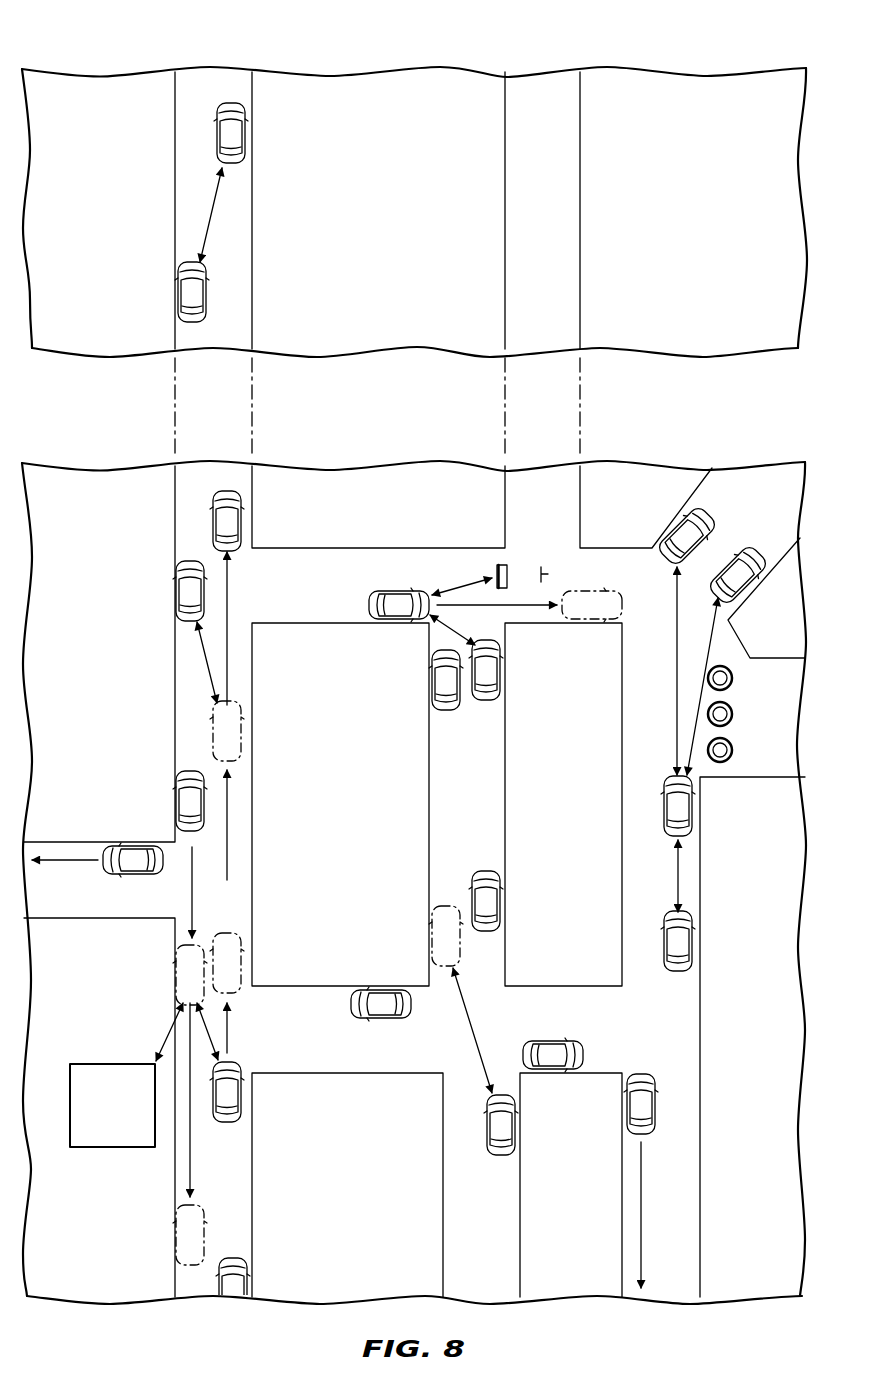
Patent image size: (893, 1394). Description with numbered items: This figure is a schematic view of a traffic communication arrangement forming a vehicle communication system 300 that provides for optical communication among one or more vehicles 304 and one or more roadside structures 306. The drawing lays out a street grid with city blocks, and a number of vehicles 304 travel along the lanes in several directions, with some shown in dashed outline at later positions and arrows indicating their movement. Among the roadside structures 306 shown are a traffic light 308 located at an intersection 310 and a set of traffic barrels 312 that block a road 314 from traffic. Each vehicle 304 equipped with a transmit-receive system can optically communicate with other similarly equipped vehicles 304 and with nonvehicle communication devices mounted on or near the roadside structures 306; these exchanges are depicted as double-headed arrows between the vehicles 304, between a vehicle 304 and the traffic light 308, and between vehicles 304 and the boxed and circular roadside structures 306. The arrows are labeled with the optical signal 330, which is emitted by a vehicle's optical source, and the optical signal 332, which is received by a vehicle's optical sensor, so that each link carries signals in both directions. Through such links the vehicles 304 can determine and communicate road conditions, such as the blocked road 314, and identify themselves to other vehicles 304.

The vehicle communication system 300 is at (78, 45).
The vehicle 304 is at (247, 135).
The roadside structure 306 is at (123, 1118).
The traffic light 308 is at (508, 572).
The intersection 310 is at (548, 574).
The traffic barrel 312 is at (733, 680).
The road 314 is at (765, 765).
The optical signal 330 is at (432, 630).
The optical signal 332 is at (213, 203).